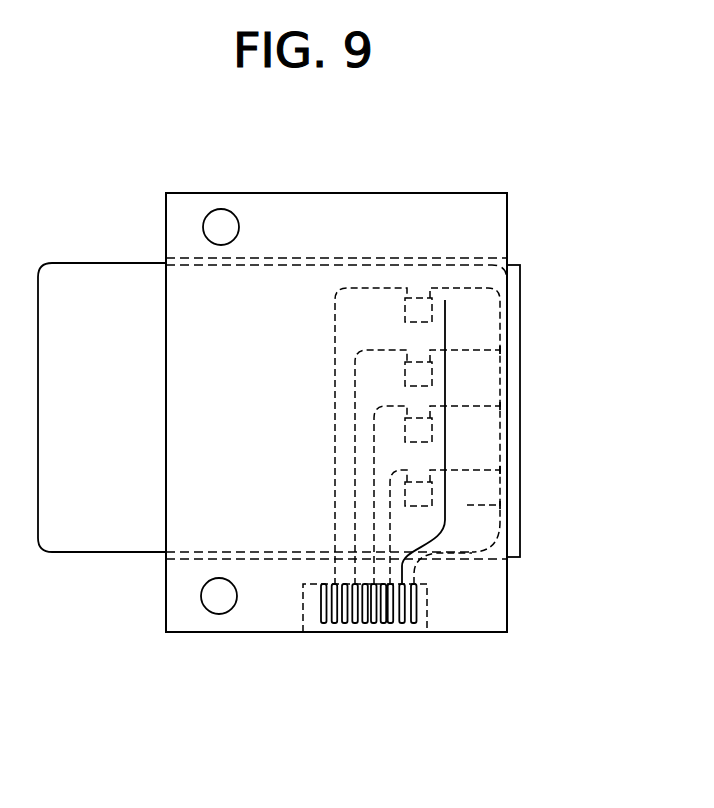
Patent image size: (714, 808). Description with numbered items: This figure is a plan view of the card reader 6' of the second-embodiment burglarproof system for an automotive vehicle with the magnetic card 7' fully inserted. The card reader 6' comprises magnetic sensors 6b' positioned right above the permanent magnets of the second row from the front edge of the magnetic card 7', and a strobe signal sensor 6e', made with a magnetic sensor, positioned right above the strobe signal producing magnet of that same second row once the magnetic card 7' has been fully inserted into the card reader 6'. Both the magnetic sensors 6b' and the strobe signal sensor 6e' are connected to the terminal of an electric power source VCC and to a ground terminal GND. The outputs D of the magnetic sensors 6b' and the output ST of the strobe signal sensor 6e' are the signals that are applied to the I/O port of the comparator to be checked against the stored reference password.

The card reader 6' is at (343, 385).
The magnetic card 7' is at (100, 377).
The magnetic sensors 6b' is at (462, 431).
The strobe signal sensor 6e' is at (495, 496).
The outputs D is at (383, 638).
The output ST is at (390, 633).
The terminal of electric power source Vcc VCC is at (405, 633).
The ground terminal GND is at (417, 633).